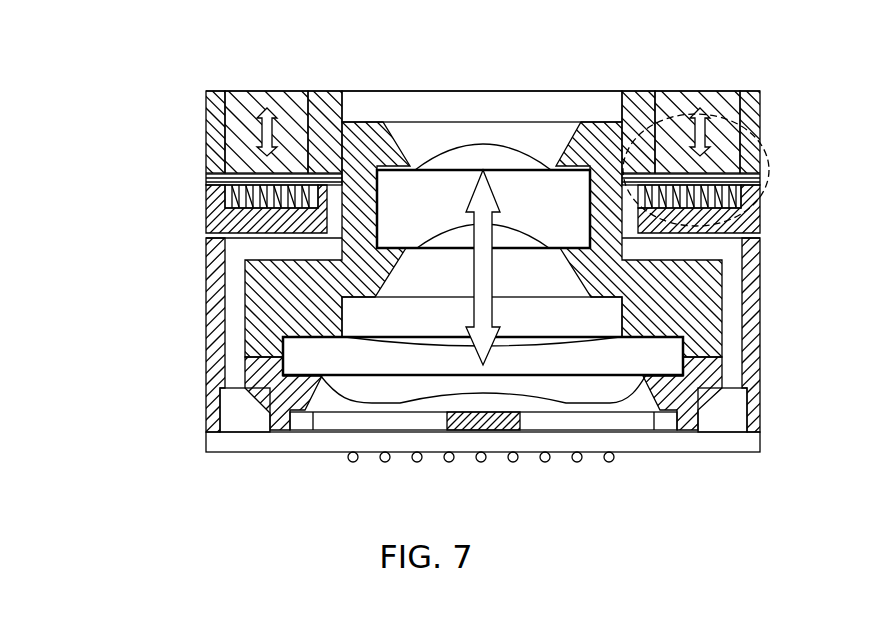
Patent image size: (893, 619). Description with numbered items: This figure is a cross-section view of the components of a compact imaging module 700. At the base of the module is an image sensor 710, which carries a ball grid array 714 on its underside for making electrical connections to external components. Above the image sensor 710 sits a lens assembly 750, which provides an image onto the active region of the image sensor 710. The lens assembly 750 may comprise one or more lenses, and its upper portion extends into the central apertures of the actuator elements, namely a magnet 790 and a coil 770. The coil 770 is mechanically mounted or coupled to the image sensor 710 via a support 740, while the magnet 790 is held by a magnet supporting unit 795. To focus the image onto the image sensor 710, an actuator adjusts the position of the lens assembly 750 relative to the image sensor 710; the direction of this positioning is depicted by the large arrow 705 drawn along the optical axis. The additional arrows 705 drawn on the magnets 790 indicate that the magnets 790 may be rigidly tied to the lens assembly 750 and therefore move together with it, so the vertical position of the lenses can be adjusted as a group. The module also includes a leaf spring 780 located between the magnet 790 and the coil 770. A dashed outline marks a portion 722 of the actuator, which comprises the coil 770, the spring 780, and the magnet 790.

The compact imaging module 700 is at (80, 365).
The arrow 705 is at (273, 107).
The image sensor 710 is at (206, 441).
The ball grid array 714 is at (383, 462).
The portion of an actuator 722 is at (769, 196).
The support 740 is at (207, 272).
The lens assembly 750 is at (518, 155).
The coil 770 is at (207, 214).
The leaf spring 780 is at (205, 178).
The magnet 790 is at (222, 103).
The magnet supporting unit 795 is at (205, 137).